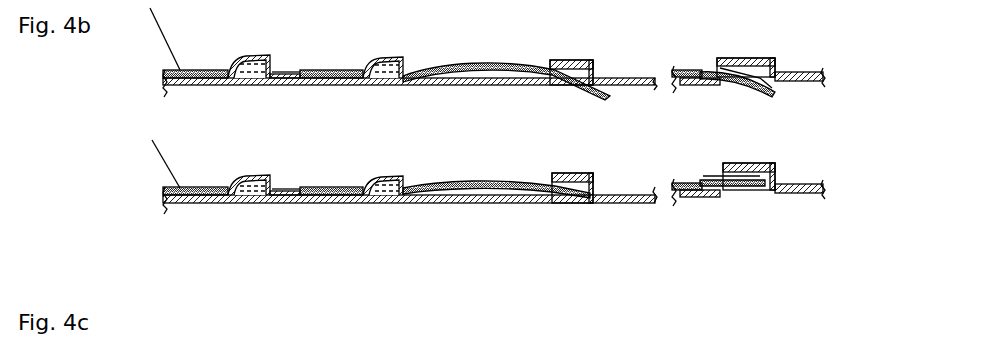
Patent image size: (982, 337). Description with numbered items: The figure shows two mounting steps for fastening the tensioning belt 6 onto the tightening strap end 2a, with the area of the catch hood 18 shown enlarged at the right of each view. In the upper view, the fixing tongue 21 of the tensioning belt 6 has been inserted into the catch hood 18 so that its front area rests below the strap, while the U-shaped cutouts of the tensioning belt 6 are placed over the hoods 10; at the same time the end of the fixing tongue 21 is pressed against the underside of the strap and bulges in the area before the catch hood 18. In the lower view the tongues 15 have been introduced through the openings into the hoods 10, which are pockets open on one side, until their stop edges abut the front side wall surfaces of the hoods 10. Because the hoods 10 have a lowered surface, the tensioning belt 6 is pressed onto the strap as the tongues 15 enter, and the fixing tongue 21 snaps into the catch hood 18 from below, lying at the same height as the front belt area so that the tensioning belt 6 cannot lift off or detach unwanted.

In FIG. 4B, the tightening strap end 2a is at (205, 87).
In FIG. 4C, the tightening strap end 2a is at (200, 205).
In FIG. 4B, the tensioning belt 6 is at (157, 35).
In FIG. 4C, the tensioning belt 6 is at (154, 153).
In FIG. 4B, the hood 10 is at (252, 55).
In FIG. 4C, the hood 10 is at (250, 175).
In FIG. 4B, the tongue 15 is at (285, 70).
In FIG. 4C, the tongue 15 is at (255, 200).
In FIG. 4B, the catch hood 18 is at (578, 60).
In FIG. 4C, the catch hood 18 is at (562, 175).
In FIG. 4B, the fixing tongue 21 is at (583, 0).
In FIG. 4C, the fixing tongue 21 is at (577, 200).